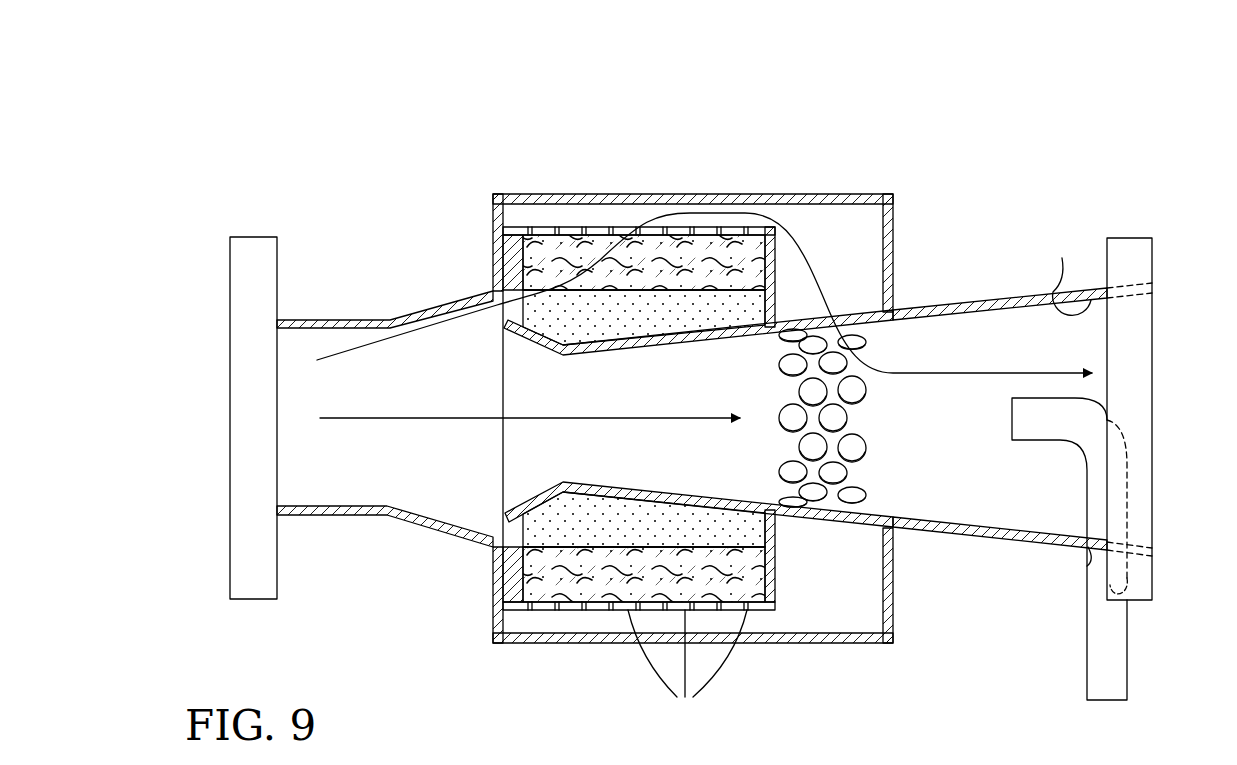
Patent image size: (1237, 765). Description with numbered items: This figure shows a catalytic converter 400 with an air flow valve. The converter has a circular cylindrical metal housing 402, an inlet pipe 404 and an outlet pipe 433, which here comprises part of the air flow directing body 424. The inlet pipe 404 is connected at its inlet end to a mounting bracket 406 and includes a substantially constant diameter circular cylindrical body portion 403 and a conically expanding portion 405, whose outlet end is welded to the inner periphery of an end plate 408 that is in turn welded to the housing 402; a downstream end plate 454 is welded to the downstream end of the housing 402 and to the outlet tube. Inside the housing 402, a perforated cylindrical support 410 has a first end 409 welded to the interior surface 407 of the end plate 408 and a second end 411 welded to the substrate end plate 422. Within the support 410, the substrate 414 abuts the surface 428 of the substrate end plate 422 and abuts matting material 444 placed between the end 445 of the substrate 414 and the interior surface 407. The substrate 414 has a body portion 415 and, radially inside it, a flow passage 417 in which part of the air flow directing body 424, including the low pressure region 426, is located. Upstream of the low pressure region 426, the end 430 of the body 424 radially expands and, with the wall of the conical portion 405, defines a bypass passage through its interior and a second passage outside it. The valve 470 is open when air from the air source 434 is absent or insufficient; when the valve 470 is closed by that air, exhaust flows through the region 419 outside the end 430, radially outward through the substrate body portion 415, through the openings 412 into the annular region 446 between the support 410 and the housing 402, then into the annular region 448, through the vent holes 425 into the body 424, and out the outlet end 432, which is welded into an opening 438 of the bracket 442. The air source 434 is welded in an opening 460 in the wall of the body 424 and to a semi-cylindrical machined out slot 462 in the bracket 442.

The catalytic converter 400 is at (704, 186).
The housing 402 is at (817, 195).
The circular cylindrical body portion 403 is at (312, 325).
The inlet pipe 404 is at (360, 320).
The conically expanding portion 405 is at (450, 300).
The mounting bracket 406 is at (253, 242).
The interior surface 407 is at (557, 568).
The end plate 408 is at (500, 577).
The first end 409 is at (503, 607).
The cylindrical support 410 is at (583, 226).
The second end 411 is at (773, 612).
The openings 412 is at (687, 669).
The substrate 414 is at (553, 600).
The body portion 415 is at (670, 253).
The flow passage 417 is at (720, 307).
The region 419 is at (503, 528).
The substrate end plate 422 is at (773, 593).
The air flow directing body 424 is at (646, 480).
The vent holes 425 is at (828, 478).
The low pressure region 426 is at (568, 380).
The surface 428 is at (743, 560).
The end 430 is at (510, 338).
The outlet end 432 is at (1064, 270).
The outlet pipe 433 is at (970, 544).
The air source 434 is at (1085, 420).
The opening 438 is at (1127, 530).
The bracket 442 is at (1125, 238).
The matting material 444 is at (540, 243).
The end 445 is at (517, 612).
The annular region 446 is at (630, 215).
The annular region 448 is at (857, 222).
The downstream end plate 454 is at (893, 615).
The opening 460 is at (1087, 566).
The semi-cylindrical machined out slot 462 is at (1127, 585).
The valve 470 is at (928, 336).